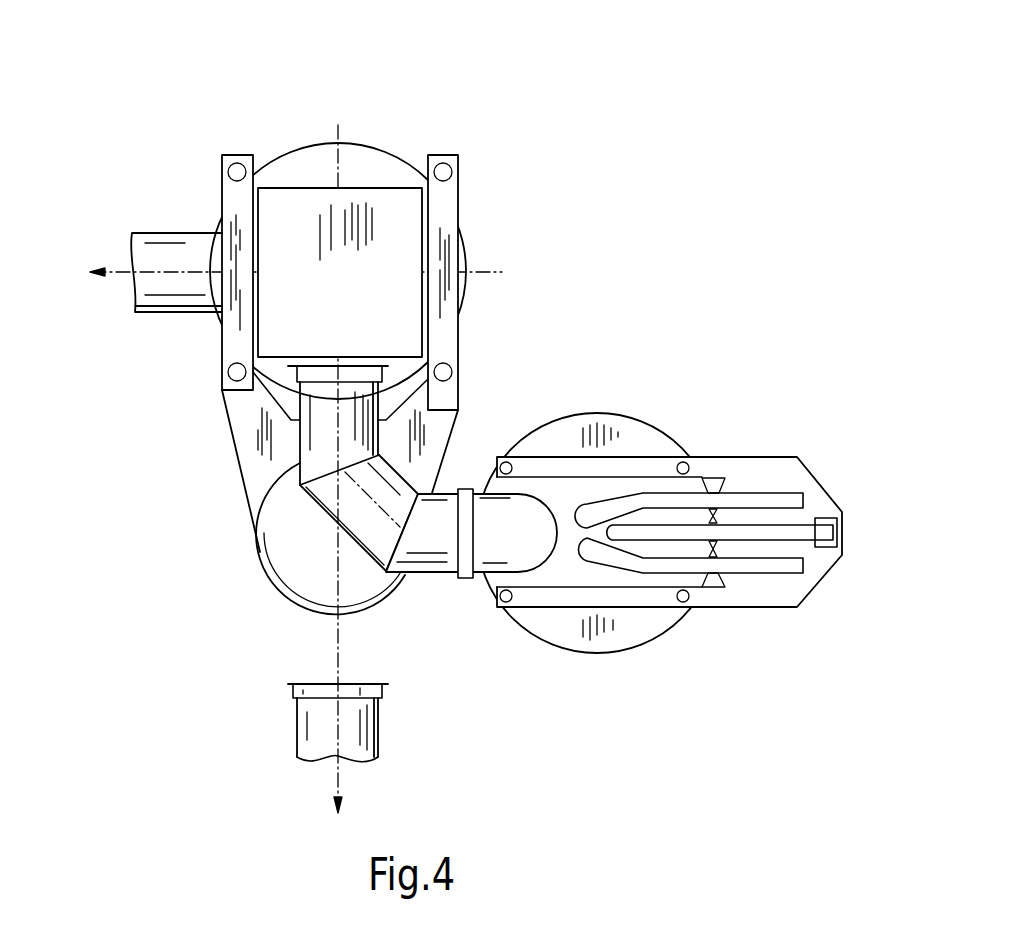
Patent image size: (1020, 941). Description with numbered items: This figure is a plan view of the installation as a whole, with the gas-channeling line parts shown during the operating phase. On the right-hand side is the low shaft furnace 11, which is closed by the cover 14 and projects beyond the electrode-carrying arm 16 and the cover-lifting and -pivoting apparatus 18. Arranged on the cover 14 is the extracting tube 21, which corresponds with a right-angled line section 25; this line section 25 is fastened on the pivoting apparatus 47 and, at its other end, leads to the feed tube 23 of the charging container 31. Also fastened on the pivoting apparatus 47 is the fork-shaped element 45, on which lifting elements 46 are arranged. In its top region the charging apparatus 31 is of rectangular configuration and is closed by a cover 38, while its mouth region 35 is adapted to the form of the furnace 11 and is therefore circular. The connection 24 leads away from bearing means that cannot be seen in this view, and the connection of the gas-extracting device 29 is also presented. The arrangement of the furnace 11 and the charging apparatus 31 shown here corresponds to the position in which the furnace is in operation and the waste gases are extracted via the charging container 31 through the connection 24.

The low shaft furnace 11 is at (666, 689).
The cover 14 is at (637, 433).
The electrode-carrying arm 16 is at (822, 538).
The cover-lifting and -pivoting apparatus 18 is at (755, 472).
The extracting tube 21 is at (508, 510).
The feed tube 23 is at (322, 365).
The connection 24 is at (178, 298).
The right-angled line section 25 is at (430, 560).
The gas-extracting device 29 is at (415, 763).
The charging container 31 is at (296, 332).
The mouth region 35 is at (372, 168).
The cover 38 is at (300, 202).
The fork-shaped element 45 is at (445, 200).
The lifting elements 46 is at (449, 368).
The pivoting apparatus 47 is at (287, 597).